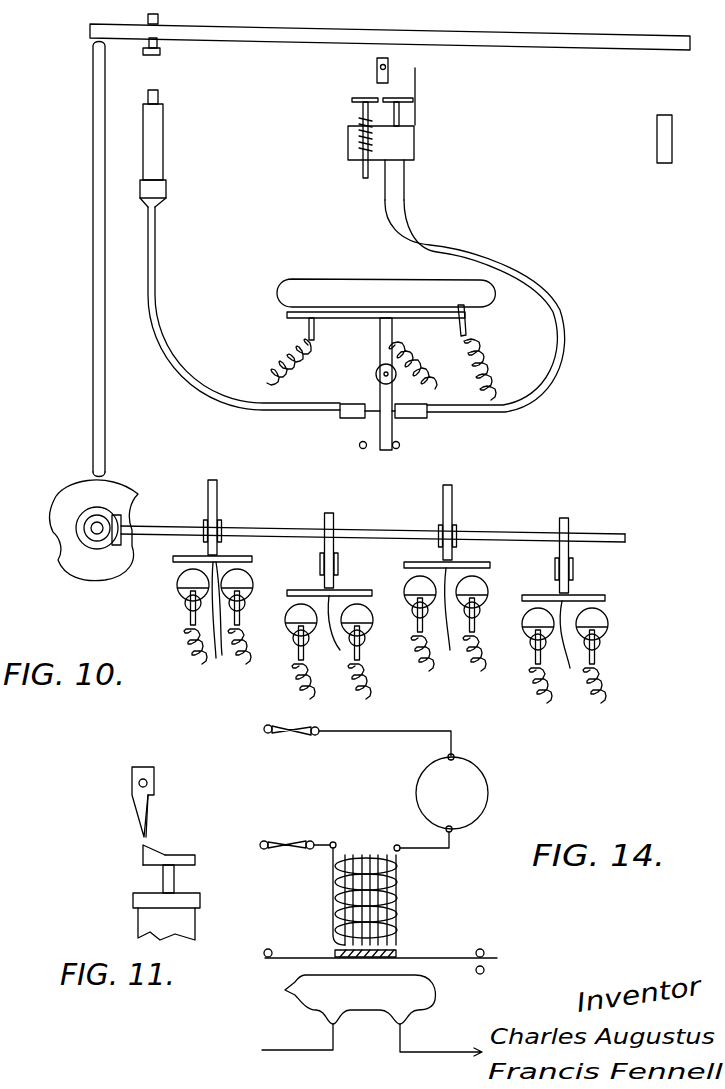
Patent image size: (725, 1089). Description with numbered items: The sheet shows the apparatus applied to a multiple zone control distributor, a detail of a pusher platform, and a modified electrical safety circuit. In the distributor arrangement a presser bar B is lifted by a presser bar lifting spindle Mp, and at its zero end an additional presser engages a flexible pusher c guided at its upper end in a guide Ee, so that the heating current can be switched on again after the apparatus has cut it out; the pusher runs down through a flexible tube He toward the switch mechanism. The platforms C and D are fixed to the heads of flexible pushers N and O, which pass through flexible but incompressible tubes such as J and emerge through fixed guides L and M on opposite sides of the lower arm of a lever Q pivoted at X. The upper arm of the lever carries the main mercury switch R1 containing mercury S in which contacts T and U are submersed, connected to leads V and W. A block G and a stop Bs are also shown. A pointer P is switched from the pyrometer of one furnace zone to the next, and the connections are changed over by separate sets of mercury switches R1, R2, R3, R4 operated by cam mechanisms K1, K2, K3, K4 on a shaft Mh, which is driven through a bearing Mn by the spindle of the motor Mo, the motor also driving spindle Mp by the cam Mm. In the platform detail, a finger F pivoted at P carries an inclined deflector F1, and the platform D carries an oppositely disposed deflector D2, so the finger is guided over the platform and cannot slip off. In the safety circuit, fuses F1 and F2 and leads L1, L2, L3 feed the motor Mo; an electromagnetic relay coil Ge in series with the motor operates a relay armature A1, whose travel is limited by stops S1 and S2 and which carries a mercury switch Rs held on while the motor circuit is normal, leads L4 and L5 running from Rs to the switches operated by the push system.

In FIG. 10, the presser bar B is at (393, 30).
In FIG. 10, the presser bar lifting spindle Mp is at (104, 466).
In FIG. 10, the flexible pusher c is at (158, 95).
In FIG. 10, the guide Ee is at (163, 160).
In FIG. 10, the tube He is at (156, 285).
In FIG. 10, the finger F is at (389, 72).
In FIG. 11, the finger F is at (132, 788).
In FIG. 10, the pointer P is at (377, 68).
In FIG. 11, the pointer P is at (148, 782).
In FIG. 14, the pointer P is at (270, 957).
In FIG. 10, the platform C is at (358, 99).
In FIG. 10, the platform D is at (413, 99).
In FIG. 11, the platform D is at (196, 861).
In FIG. 10, the block G is at (404, 192).
In FIG. 11, the block G is at (200, 900).
In FIG. 10, the flexible tube J is at (450, 246).
In FIG. 10, the stop block Bs is at (657, 141).
In FIG. 10, the main mercury switch R1 is at (343, 294).
In FIG. 10, the mercury S is at (298, 312).
In FIG. 10, the contact T is at (310, 330).
In FIG. 10, the electric lead V is at (277, 367).
In FIG. 10, the pivot X is at (376, 374).
In FIG. 10, the electric lead W is at (460, 369).
In FIG. 10, the contact U is at (468, 326).
In FIG. 10, the fixed guide L is at (338, 416).
In FIG. 10, the fixed guide M is at (424, 416).
In FIG. 10, the flexible pusher N is at (379, 420).
In FIG. 10, the flexible pusher O is at (396, 420).
In FIG. 10, the lever Q is at (383, 452).
In FIG. 10, the motor spindle Mo is at (96, 533).
In FIG. 14, the motor spindle Mo is at (467, 782).
In FIG. 10, the cam Mm is at (128, 502).
In FIG. 10, the bearing Mn is at (122, 526).
In FIG. 10, the shaft Mh is at (237, 530).
In FIG. 10, the cam mechanism K1 is at (218, 552).
In FIG. 10, the cam mechanism K2 is at (334, 520).
In FIG. 10, the cam mechanism K3 is at (453, 514).
In FIG. 10, the cam mechanism K4 is at (569, 523).
In FIG. 10, the set of mercury switches R2 is at (329, 647).
In FIG. 10, the set of mercury switches R3 is at (446, 621).
In FIG. 10, the set of mercury switches R4 is at (565, 652).
In FIG. 11, the inclined deflector F1 is at (136, 822).
In FIG. 14, the inclined deflector F1 is at (290, 733).
In FIG. 11, the deflector D2 is at (152, 853).
In FIG. 14, the electric lead L1 is at (370, 732).
In FIG. 14, the electric lead L2 is at (326, 845).
In FIG. 14, the electric lead L3 is at (436, 850).
In FIG. 14, the electric lead L4 is at (290, 1050).
In FIG. 14, the electric lead L5 is at (440, 1050).
In FIG. 14, the fuse F2 is at (284, 843).
In FIG. 14, the electromagnetic relay coil Ge is at (335, 916).
In FIG. 14, the relay armature A1 is at (305, 957).
In FIG. 14, the stop S1 is at (494, 938).
In FIG. 14, the stop S2 is at (483, 974).
In FIG. 14, the mercury switch Rs is at (330, 990).